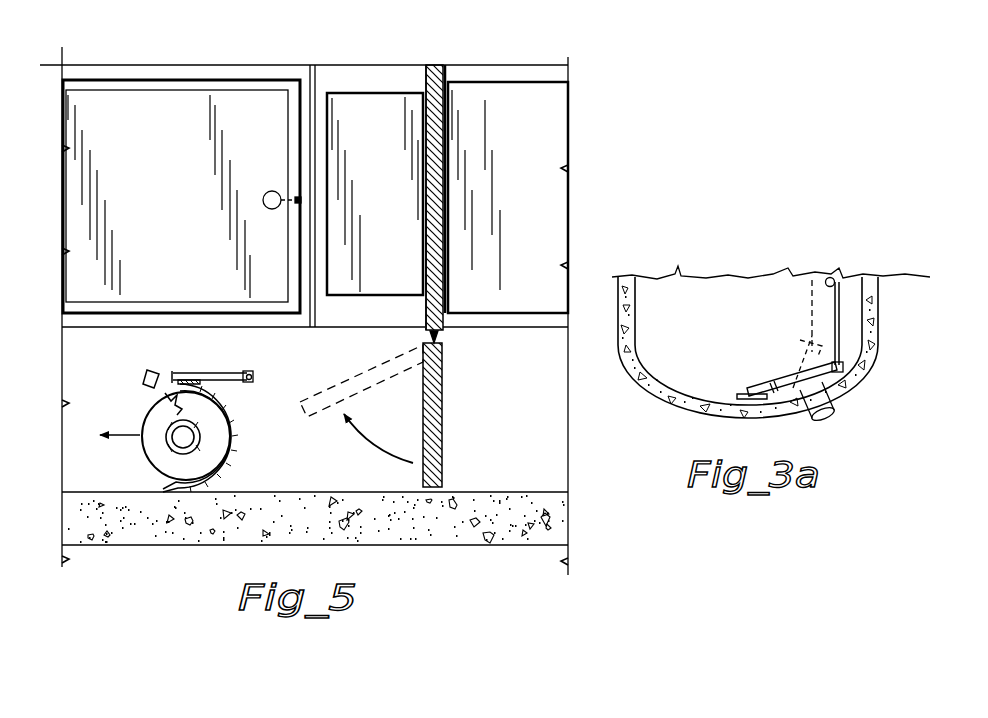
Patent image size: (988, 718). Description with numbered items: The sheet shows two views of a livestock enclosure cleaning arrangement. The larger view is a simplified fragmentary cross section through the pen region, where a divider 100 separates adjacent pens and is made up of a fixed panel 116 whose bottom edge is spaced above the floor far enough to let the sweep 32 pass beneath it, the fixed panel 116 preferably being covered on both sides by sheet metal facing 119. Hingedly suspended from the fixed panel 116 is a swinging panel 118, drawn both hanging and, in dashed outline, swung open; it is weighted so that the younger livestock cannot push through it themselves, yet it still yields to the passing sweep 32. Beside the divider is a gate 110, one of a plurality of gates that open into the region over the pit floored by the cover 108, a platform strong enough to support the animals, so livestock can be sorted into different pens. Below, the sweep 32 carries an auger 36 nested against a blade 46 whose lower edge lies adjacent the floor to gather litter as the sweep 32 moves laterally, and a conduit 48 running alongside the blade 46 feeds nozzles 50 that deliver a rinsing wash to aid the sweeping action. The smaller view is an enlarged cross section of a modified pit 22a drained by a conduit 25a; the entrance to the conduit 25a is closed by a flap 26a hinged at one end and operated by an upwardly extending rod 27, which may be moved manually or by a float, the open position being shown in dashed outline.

In FIG. 5, the gate 110 is at (293, 44).
In FIG. 5, the divider 100 is at (448, 139).
In FIG. 5, the fixed panel 116 is at (445, 192).
In FIG. 5, the cover 108 is at (492, 316).
In FIG. 5, the sheet metal facing 119 is at (423, 244).
In FIG. 5, the swinging panel 118 is at (439, 421).
In FIG. 5, the sweep 32 is at (175, 415).
In FIG. 5, the auger 36 is at (150, 417).
In FIG. 5, the blade 46 is at (236, 438).
In FIG. 5, the conduit 48 is at (249, 374).
In FIG. 5, the nozzle 50 is at (145, 380).
In FIG. 3A, the pit 22a is at (870, 338).
In FIG. 3A, the rod 27 is at (831, 278).
In FIG. 3A, the flap 26a is at (790, 374).
In FIG. 3A, the conduit 25a is at (830, 407).